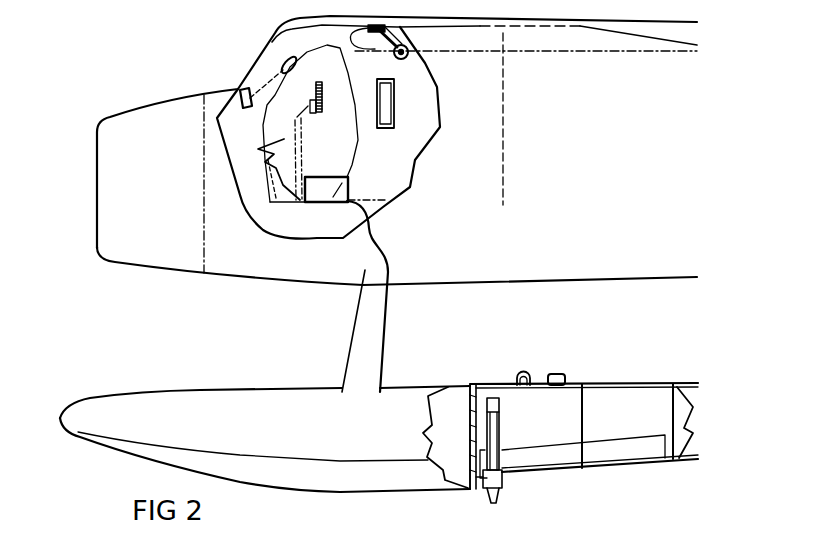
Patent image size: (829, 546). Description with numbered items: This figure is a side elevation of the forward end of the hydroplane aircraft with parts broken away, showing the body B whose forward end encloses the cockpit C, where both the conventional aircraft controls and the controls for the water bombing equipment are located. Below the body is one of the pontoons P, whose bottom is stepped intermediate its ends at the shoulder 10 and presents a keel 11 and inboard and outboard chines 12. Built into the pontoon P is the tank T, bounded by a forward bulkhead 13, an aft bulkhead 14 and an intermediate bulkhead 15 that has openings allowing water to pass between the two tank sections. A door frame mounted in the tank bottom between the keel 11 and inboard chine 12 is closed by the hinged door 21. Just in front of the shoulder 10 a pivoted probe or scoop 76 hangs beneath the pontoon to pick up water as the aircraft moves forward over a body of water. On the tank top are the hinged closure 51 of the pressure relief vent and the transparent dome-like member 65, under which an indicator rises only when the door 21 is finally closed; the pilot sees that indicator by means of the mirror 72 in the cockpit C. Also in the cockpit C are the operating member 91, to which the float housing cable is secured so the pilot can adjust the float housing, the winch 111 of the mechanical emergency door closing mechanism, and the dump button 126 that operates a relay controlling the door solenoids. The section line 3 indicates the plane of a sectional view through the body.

The section line 3- 3 is at (472, 205).
The mirror 72 is at (283, 63).
The dump button 126 is at (312, 79).
The winch 111 is at (409, 51).
The fuselage or body B is at (437, 96).
The cockpit C is at (403, 148).
The operating member 91 is at (322, 177).
The pontoon P is at (184, 388).
The keel 11 is at (378, 493).
The chine 12 is at (343, 458).
The shoulder 10 is at (470, 486).
The tank T is at (635, 378).
The forward bulkhead 13 is at (469, 396).
The intermediate bulkhead 15 is at (586, 398).
The aft bulkhead 14 is at (672, 413).
The door 21 is at (555, 462).
The probe or scoop 76 is at (495, 497).
The dome-like member 65 is at (523, 376).
The closure 51 is at (559, 373).